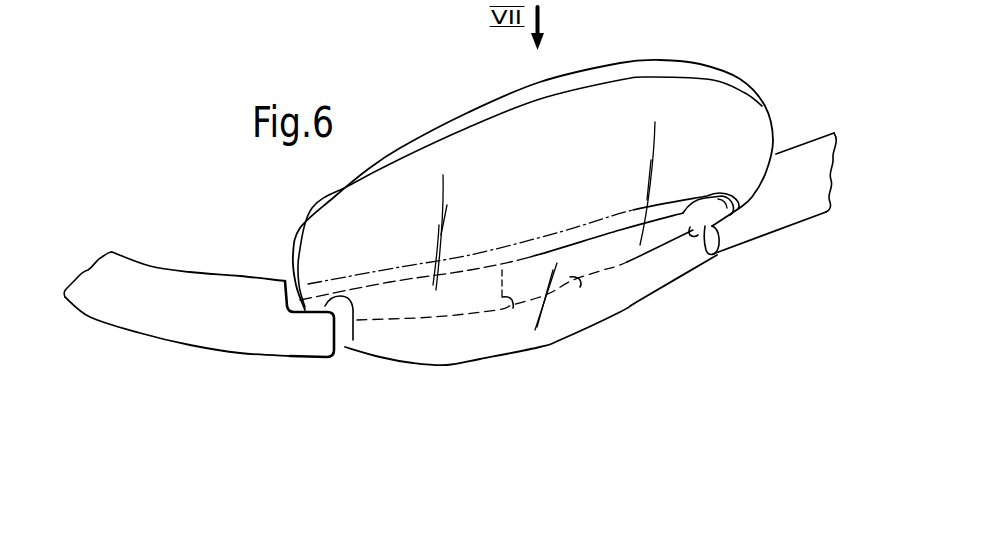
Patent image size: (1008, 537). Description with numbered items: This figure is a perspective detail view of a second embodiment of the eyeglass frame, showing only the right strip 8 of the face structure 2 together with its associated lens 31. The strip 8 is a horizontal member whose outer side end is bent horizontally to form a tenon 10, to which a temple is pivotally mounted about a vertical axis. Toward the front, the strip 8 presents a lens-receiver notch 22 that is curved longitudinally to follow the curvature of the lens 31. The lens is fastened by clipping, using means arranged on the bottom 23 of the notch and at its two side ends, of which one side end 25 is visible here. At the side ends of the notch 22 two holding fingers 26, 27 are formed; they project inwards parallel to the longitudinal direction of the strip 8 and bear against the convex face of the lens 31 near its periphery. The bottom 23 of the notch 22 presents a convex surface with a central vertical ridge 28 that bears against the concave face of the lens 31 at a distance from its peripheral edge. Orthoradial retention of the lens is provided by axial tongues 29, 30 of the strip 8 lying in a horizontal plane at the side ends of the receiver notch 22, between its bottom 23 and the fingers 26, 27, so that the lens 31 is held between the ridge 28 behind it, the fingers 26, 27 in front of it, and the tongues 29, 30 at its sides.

The face structure 2 is at (181, 258).
The right strip 8 is at (808, 144).
The horizontally-bent outer side end (tenon) 10 is at (92, 303).
The lens-receiver notch 22 is at (400, 384).
The bottom of the receiver notch 23 is at (580, 287).
The side end of the receiver notch 25 is at (722, 204).
The holding finger 26 is at (323, 339).
The holding finger 27 is at (712, 255).
The central vertical ridge 28 is at (513, 308).
The axial tongue 29 is at (353, 340).
The axial tongue 30 is at (690, 232).
The lens 31 is at (465, 142).